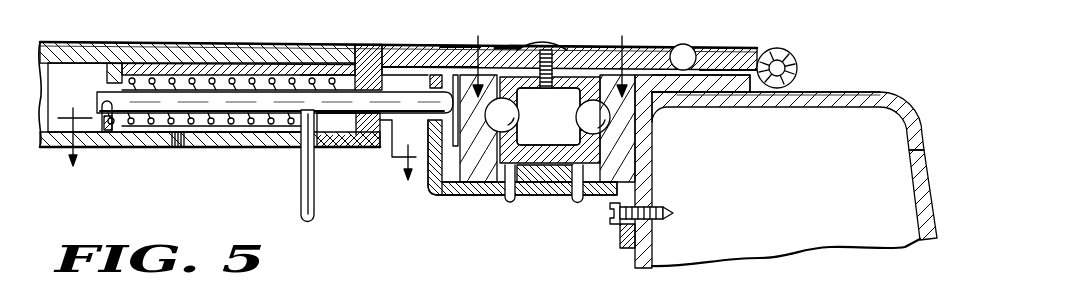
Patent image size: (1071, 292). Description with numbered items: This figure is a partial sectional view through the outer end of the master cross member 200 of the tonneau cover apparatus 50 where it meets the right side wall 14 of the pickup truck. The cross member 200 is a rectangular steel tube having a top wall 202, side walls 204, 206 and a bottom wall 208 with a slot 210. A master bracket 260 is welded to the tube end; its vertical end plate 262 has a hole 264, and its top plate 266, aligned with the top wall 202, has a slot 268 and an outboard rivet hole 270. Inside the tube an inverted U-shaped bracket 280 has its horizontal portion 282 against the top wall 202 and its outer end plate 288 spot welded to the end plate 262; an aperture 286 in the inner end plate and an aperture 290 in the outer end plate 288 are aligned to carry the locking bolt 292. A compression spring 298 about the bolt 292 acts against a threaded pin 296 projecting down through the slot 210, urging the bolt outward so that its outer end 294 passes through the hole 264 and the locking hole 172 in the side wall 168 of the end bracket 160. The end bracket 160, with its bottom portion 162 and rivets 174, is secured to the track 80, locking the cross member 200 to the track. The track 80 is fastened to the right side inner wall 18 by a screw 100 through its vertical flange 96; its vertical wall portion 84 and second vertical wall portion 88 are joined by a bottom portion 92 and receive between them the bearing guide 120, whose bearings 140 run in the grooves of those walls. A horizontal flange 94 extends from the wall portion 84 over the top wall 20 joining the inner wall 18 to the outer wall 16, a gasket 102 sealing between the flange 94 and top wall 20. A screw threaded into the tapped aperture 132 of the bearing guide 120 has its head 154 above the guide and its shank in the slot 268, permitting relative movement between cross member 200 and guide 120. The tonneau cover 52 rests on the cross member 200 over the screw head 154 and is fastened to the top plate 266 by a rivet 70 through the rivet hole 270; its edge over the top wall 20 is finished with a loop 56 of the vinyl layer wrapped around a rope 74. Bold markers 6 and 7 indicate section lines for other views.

The master cross member 200 is at (43, 152).
The top wall 202 is at (92, 52).
The side wall 204 is at (145, 133).
The side wall 206 is at (48, 52).
The bottom wall 208 is at (128, 148).
The slot 210 is at (188, 140).
The master bracket 260 is at (384, 54).
The vertical end plate 262 is at (376, 150).
The hole 264 is at (380, 101).
The top plate 266 is at (428, 52).
The slot 268 is at (507, 49).
The rivet hole 270 is at (695, 62).
The bracket 280 is at (264, 58).
The horizontally extending portion 282 is at (160, 68).
The aperture 286 is at (106, 133).
The outer end plate 288 is at (346, 77).
The aperture 290 is at (336, 125).
The locking bolt 292 is at (217, 98).
The outer end of locking bolt 294 is at (465, 47).
The pin 296 is at (301, 197).
The compression spring 298 is at (278, 128).
The tonneau cover apparatus 50 is at (416, 46).
The tonneau cover 52 is at (784, 39).
The loop 56 is at (790, 58).
The rope 74 is at (797, 69).
The rivet 70 is at (697, 44).
The screw head 154 is at (549, 49).
The bearing guide 120 is at (580, 80).
The tapped aperture 132 is at (548, 116).
The bearings 140 is at (577, 122).
The locking hole 172 is at (470, 180).
The rivets 174 is at (503, 208).
The side wall 168 is at (427, 173).
The bottom portion 162 is at (452, 198).
The end bracket 160 is at (594, 203).
The track 80 is at (467, 194).
The second vertical wall portion 88 is at (482, 185).
The bottom portion 92 is at (506, 198).
The vertical wall portion 84 is at (626, 161).
The horizontal flange 94 is at (748, 85).
The gasket 102 is at (722, 93).
The screw 100 is at (608, 220).
The vertical flange 96 is at (620, 242).
The right side wall 14 is at (890, 83).
The right side outer wall 16 is at (930, 140).
The right side top wall 20 is at (847, 104).
The right side inner wall 18 is at (637, 263).
The section line 7 is at (237, 136).
The left side wall 6 is at (550, 58).